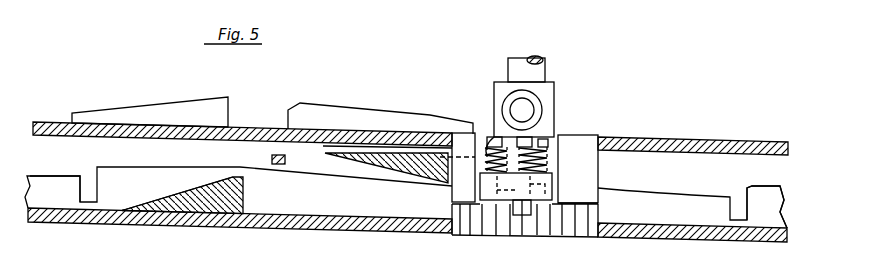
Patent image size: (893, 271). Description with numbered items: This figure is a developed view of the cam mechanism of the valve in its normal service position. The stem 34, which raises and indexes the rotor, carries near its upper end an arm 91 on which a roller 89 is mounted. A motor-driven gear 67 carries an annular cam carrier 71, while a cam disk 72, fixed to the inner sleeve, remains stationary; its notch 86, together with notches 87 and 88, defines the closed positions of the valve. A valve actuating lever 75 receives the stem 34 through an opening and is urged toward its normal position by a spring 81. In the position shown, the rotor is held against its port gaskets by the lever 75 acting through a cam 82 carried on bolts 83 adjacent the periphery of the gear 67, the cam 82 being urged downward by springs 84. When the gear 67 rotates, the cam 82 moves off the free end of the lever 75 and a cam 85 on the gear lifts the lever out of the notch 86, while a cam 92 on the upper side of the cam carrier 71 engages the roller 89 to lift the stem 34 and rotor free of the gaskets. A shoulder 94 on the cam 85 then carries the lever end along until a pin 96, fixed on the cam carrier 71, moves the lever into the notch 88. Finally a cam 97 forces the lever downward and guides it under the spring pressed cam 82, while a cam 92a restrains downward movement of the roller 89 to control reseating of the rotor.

The stem 34 is at (538, 68).
The gear 67 is at (568, 225).
The cam carrier 71 is at (664, 144).
The cam disk 72 is at (340, 213).
The valve actuating lever 75 is at (524, 218).
The spring 81 is at (554, 161).
The cam 82 is at (527, 184).
The bolts 83 is at (540, 137).
The springs 84 is at (505, 140).
The cam 85 is at (182, 206).
The notch 86 is at (598, 198).
The notch 87 is at (747, 210).
The notch 88 is at (80, 196).
The roller 89 is at (538, 105).
The arm 91 is at (494, 93).
The cam 92 is at (192, 101).
The cam 92a is at (338, 106).
The shoulder 94 is at (244, 185).
The pin 96 is at (271, 159).
The cam 97 is at (368, 155).